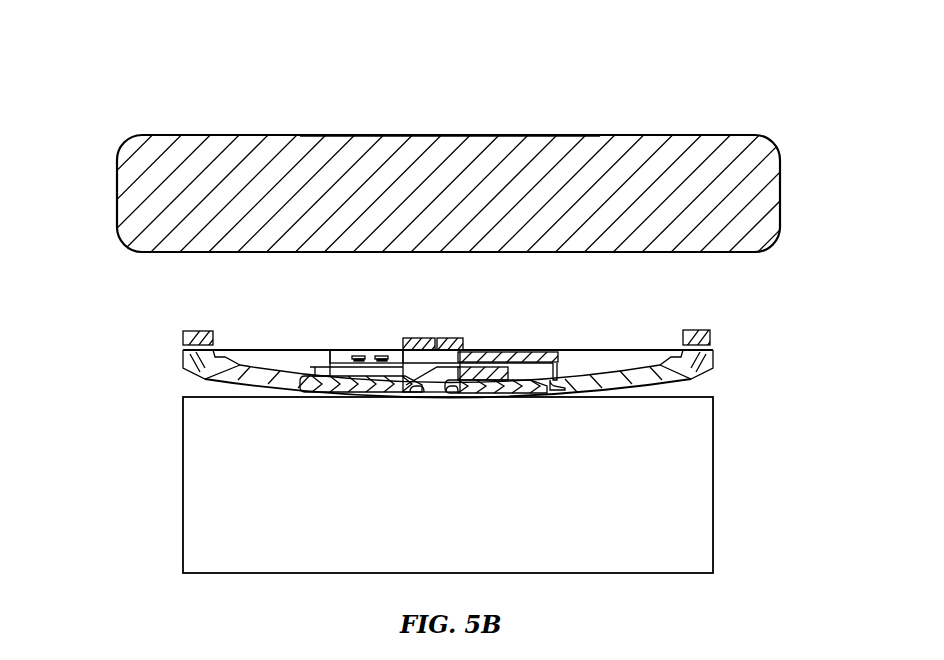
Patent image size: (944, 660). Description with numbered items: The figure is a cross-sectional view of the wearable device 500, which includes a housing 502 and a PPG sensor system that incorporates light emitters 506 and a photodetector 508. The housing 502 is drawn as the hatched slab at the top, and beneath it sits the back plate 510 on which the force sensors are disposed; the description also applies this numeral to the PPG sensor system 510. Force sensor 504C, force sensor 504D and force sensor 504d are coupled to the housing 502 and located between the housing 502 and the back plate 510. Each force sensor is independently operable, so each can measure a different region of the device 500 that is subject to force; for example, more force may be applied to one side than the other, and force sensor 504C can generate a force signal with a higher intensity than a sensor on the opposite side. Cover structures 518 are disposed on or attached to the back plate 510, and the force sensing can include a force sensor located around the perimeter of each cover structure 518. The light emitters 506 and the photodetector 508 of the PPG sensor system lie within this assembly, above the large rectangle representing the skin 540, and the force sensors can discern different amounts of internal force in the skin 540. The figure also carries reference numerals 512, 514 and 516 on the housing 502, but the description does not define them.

The device 500 is at (88, 78).
The housing 502 is at (165, 135).
The top surface of cover glass 512 is at (625, 135).
The side edge of cover glass 514 is at (117, 186).
The bottom surface of cover glass 516 is at (615, 258).
The back plate 510 is at (183, 371).
The force sensor 504C is at (198, 331).
The force sensor 504D is at (450, 338).
The force sensor 504d is at (697, 330).
The light emitters 506 is at (384, 350).
The photodetector 508 is at (488, 352).
The cover structures 518 is at (326, 352).
The skin 540 is at (464, 495).